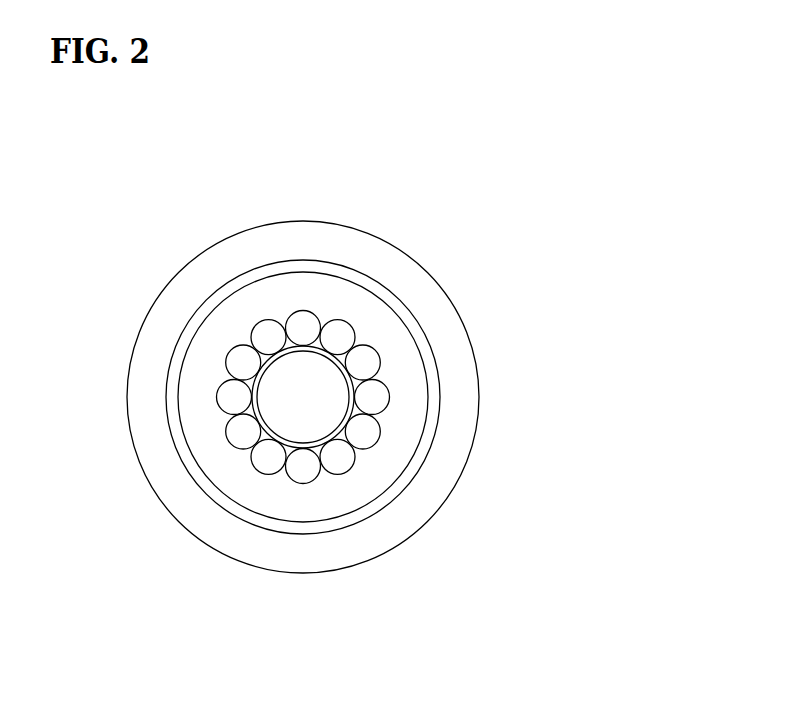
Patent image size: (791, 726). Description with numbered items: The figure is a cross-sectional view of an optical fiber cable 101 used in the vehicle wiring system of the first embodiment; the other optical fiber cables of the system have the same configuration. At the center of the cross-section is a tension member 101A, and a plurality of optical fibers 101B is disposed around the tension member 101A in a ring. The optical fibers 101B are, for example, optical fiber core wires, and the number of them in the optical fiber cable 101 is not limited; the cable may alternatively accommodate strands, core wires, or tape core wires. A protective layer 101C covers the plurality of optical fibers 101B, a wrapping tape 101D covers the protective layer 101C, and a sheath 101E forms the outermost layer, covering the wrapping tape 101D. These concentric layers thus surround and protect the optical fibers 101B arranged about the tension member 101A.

The optical fiber cable 101 is at (683, 112).
The tension member 101A is at (313, 415).
The optical fibers 101B is at (363, 433).
The protective layer 101C is at (410, 387).
The wrapping tape 101D is at (422, 327).
The sheath 101E is at (403, 252).